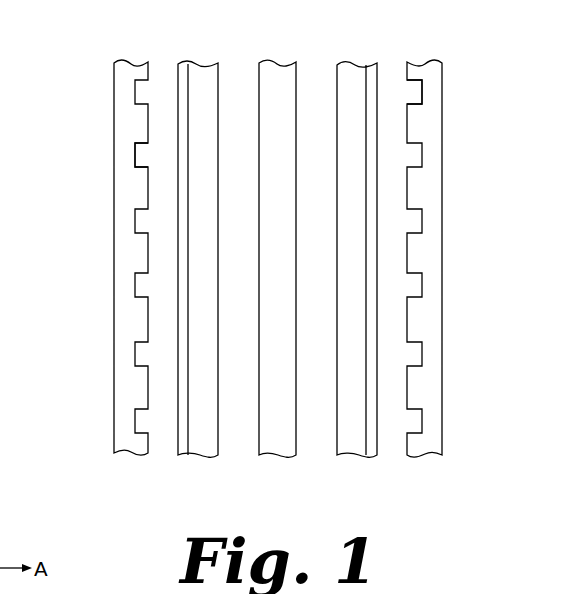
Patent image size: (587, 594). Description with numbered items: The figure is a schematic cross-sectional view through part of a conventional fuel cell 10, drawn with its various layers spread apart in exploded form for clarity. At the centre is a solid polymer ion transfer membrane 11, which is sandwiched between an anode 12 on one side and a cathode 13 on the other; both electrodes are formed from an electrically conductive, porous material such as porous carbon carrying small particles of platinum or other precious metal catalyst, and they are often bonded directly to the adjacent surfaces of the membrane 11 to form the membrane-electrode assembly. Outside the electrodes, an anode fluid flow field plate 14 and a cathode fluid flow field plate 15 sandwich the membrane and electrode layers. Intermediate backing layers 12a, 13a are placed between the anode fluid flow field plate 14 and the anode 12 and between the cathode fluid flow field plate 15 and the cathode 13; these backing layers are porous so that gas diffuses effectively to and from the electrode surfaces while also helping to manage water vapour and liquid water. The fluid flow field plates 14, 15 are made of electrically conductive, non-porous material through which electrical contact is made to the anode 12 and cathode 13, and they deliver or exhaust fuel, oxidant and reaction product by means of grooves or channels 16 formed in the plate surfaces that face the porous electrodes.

The fuel cell 10 is at (106, 51).
The solid polymer ion transfer membrane 11 is at (280, 440).
The anode 12 is at (190, 258).
The intermediate backing layer 12a is at (184, 70).
The cathode 13 is at (374, 260).
The intermediate backing layer 13a is at (371, 72).
The anode fluid flow field plate 14 is at (128, 443).
The cathode fluid flow field plate 15 is at (432, 440).
The grooves or channels 16 is at (135, 162).